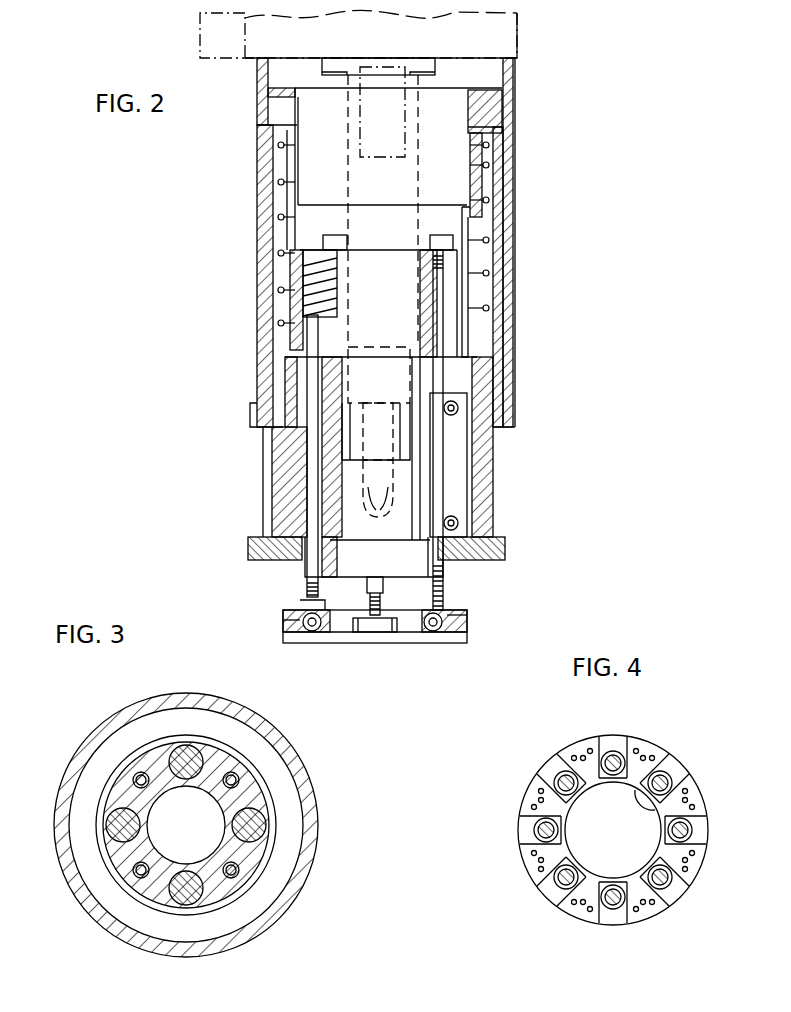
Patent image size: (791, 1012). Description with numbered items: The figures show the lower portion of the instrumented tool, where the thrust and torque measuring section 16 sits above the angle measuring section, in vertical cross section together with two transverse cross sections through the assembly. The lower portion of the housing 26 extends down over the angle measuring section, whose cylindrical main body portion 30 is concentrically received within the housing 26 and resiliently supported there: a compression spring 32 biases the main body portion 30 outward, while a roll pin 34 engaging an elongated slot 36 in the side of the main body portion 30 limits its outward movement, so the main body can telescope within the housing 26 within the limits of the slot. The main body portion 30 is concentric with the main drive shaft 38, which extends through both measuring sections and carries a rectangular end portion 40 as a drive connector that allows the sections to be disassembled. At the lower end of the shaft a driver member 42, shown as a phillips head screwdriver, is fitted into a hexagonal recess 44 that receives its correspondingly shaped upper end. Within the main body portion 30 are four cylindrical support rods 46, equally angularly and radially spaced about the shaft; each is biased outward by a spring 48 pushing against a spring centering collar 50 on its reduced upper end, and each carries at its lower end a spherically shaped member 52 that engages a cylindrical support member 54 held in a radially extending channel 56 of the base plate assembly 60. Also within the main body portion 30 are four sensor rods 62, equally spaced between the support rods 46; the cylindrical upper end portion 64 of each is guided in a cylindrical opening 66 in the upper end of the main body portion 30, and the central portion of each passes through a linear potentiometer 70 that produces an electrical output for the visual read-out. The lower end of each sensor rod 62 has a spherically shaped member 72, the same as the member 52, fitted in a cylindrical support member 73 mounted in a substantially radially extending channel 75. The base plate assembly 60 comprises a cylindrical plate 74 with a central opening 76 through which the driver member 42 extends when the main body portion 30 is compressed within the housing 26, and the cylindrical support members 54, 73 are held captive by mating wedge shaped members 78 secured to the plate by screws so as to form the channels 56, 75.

In FIG. 2, the thrust and torque measuring section 16 is at (520, 34).
In FIG. 2, the housing 26 is at (512, 208).
In FIG. 2, the main body portion 30 is at (485, 472).
In FIG. 2, the compression spring 32 is at (485, 242).
In FIG. 2, the roll pin 34 is at (257, 407).
In FIG. 2, the elongated slot 36 is at (267, 498).
In FIG. 2, the main drive shaft 38 is at (456, 177).
In FIG. 2, the rectangular end portion 40 is at (445, 122).
In FIG. 2, the driver member 42 is at (390, 508).
In FIG. 2, the hexagonal recess 44 is at (393, 427).
In FIG. 2, the support rods 46 is at (303, 589).
In FIG. 3, the support rods 46 is at (186, 748).
In FIG. 2, the spring 48 is at (303, 300).
In FIG. 2, the spring centering collar 50 is at (303, 347).
In FIG. 2, the spherically shaped members 52 is at (293, 606).
In FIG. 2, the cylindrical support members 54 is at (288, 624).
In FIG. 4, the radially extending channels 56 is at (527, 832).
In FIG. 2, the base plate assembly 60 is at (408, 648).
In FIG. 2, the sensor rods 62 is at (442, 602).
In FIG. 3, the sensor rods 62 is at (135, 777).
In FIG. 2, the upper end portion 64 is at (442, 381).
In FIG. 2, the cylindrical opening 66 is at (463, 331).
In FIG. 2, the linear potentiometer 70 is at (457, 430).
In FIG. 2, the spherically shaped member 72 is at (447, 636).
In FIG. 2, the cylindrical support members 73 is at (458, 628).
In FIG. 2, the cylindrical plate 74 is at (315, 644).
In FIG. 4, the radially extending channels 75 is at (548, 775).
In FIG. 2, the central opening 76 is at (372, 644).
In FIG. 4, the central opening 76 is at (683, 780).
In FIG. 4, the wedge shaped members 78 is at (677, 762).